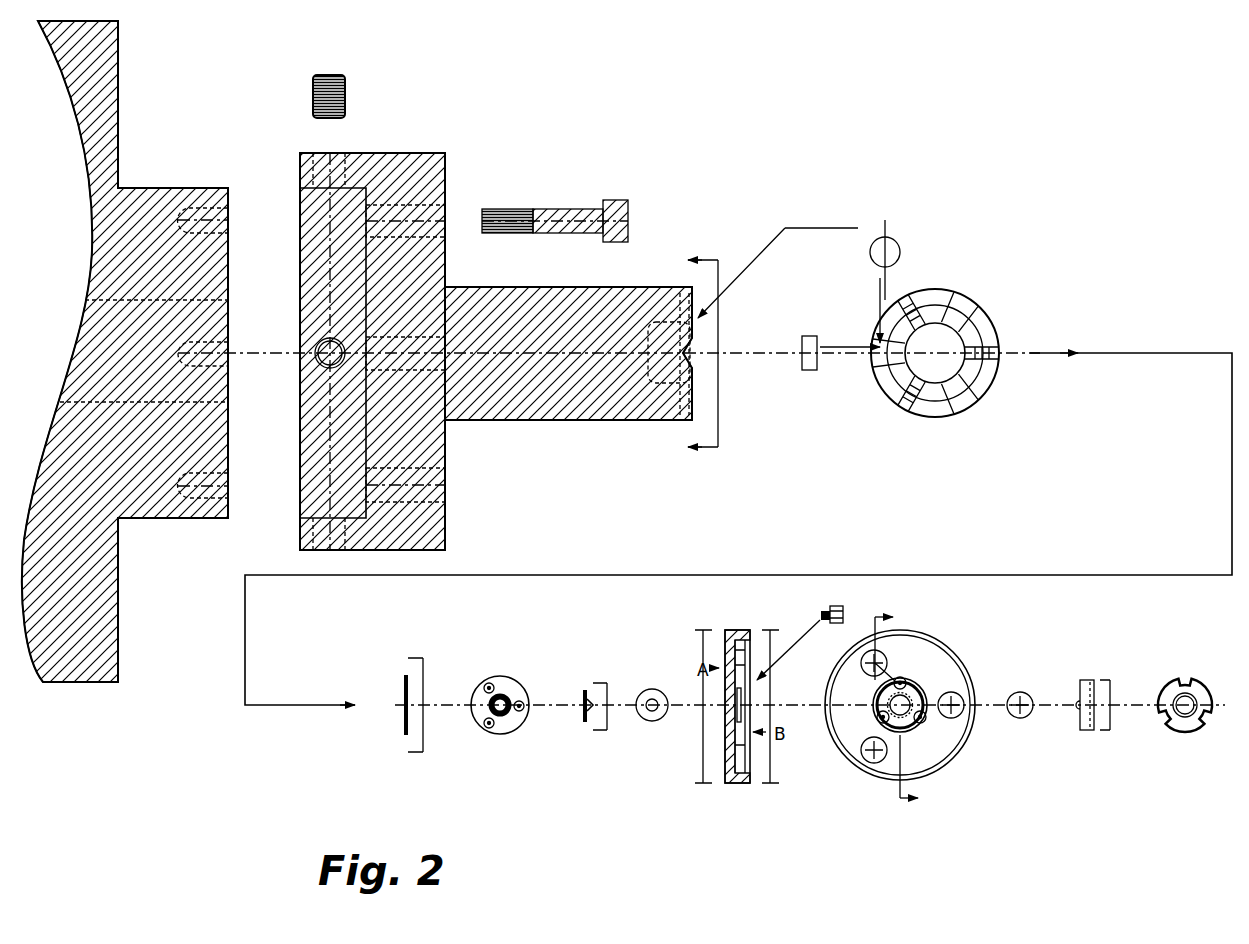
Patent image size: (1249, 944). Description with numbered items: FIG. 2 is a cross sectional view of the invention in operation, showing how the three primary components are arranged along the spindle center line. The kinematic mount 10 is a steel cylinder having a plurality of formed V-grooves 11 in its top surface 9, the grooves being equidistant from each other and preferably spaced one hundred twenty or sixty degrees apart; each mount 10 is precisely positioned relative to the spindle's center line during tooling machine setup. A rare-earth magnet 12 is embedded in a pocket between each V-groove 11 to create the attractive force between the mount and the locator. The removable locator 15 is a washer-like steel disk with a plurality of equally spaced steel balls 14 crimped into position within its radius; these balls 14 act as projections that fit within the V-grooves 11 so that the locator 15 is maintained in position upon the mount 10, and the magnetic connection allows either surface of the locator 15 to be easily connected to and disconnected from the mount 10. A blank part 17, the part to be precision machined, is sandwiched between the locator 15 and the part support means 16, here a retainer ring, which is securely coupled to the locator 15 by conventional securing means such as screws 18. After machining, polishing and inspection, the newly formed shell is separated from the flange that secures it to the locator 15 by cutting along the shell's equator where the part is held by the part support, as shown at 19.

The top surface 9 is at (694, 408).
The kinematic mount 10 is at (640, 278).
The V-grooves 11 is at (697, 360).
The rare-earth magnet 12 is at (866, 258).
The steel balls 14 is at (1018, 688).
The locator 15 is at (737, 786).
The part support means 16 is at (477, 679).
The blank part 17 is at (592, 680).
The screws 18 is at (829, 603).
The part support cutting location 19 is at (1172, 678).